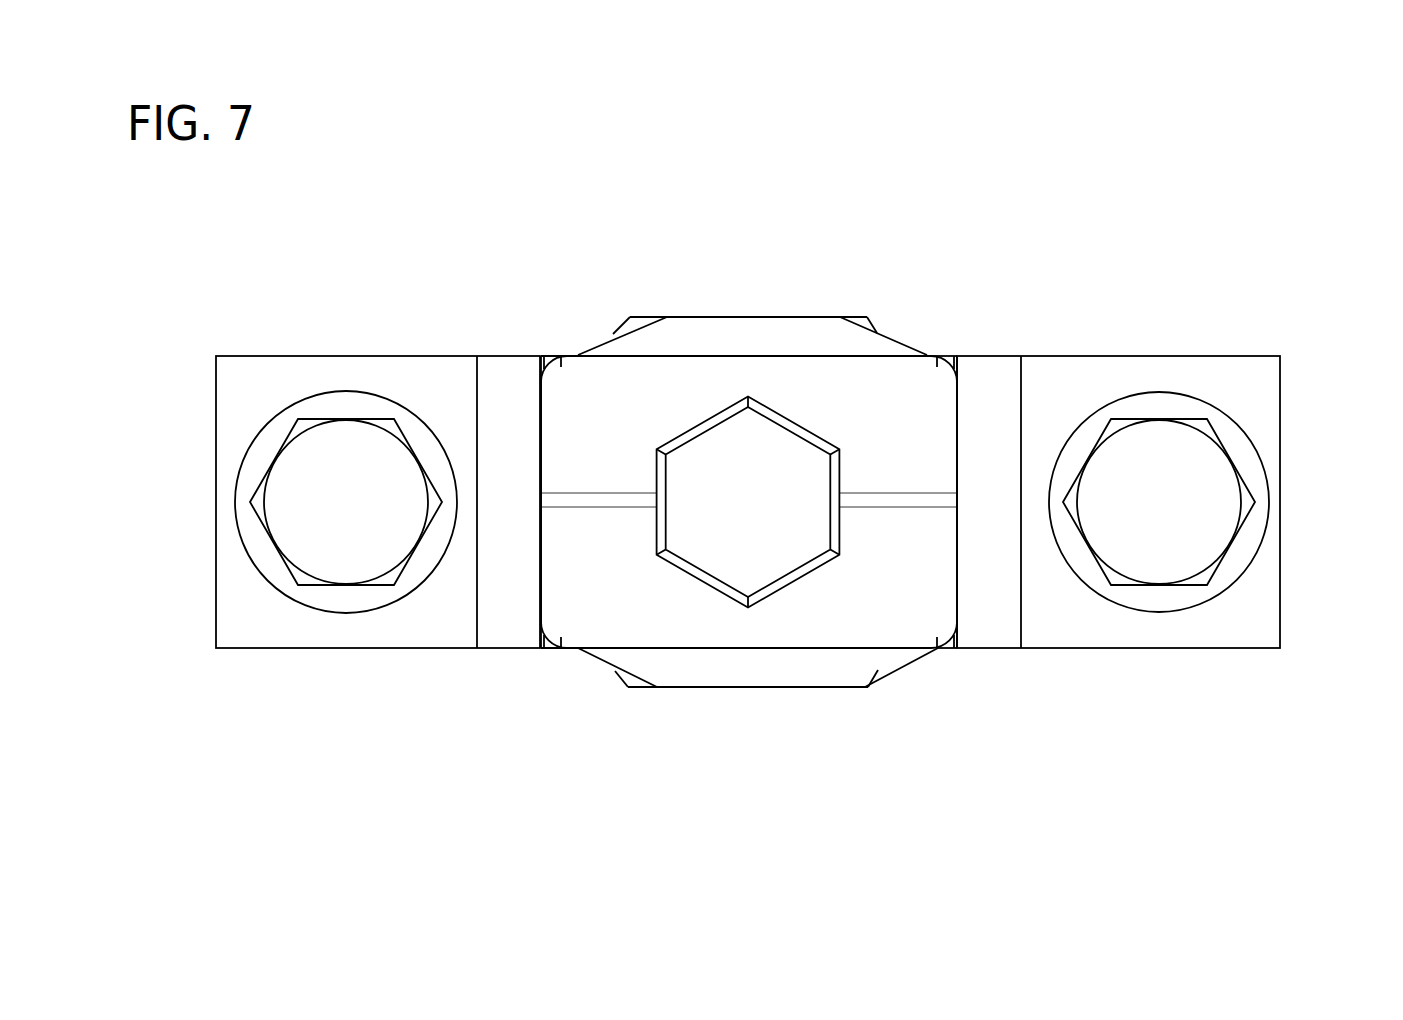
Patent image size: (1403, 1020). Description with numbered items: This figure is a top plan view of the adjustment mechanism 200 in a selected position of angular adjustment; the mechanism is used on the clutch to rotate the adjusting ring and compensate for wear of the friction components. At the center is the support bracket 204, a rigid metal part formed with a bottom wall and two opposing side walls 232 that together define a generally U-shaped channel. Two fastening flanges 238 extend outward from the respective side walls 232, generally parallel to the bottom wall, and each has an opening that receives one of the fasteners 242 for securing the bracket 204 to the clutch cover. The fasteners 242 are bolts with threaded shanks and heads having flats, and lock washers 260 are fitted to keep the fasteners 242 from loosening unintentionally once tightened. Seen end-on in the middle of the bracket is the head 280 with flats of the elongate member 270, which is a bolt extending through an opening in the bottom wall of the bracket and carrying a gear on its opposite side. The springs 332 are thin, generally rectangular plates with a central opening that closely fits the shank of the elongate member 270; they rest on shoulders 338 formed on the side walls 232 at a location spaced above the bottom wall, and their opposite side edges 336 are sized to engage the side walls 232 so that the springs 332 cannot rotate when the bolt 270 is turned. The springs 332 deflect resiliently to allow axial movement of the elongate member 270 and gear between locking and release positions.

The adjustment mechanism 200 is at (1272, 167).
The support bracket 204 is at (1272, 350).
The fastening flanges 238 is at (248, 385).
The fasteners 242 is at (288, 560).
The lock washers 260 is at (343, 610).
The elongate member 270 is at (615, 630).
The head 280 is at (775, 467).
The side walls 232 is at (558, 356).
The side edges 336 is at (540, 423).
The shoulders 338 is at (540, 648).
The springs 332 is at (778, 663).